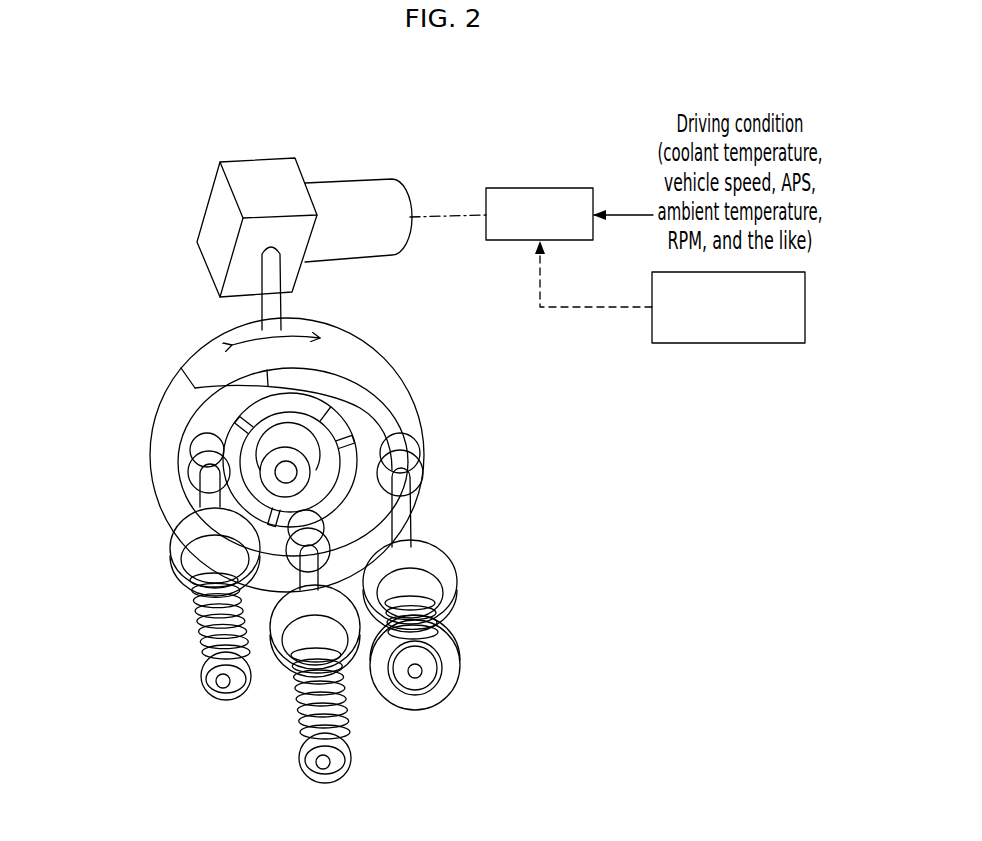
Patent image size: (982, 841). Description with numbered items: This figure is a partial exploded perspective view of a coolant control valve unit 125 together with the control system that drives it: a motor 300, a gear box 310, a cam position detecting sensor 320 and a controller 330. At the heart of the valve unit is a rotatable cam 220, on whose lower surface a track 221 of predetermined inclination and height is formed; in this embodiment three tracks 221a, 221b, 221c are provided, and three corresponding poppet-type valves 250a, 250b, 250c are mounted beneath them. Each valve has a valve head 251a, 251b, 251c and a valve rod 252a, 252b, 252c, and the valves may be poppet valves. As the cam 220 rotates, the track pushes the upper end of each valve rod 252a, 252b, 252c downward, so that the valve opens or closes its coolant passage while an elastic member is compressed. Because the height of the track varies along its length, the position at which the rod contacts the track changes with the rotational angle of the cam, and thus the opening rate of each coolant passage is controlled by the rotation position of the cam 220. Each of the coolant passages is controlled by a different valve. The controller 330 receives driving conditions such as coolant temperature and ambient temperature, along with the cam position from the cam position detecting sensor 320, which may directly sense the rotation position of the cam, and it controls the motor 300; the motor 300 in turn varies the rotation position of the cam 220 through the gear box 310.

The coolant control valve unit 125 is at (165, 342).
The cam 220 is at (363, 357).
The track 221 is at (369, 449).
The first track 221a is at (370, 403).
The second track 221b is at (370, 432).
The third track 221c is at (345, 470).
The first valve 250a is at (461, 571).
The second valve 250b is at (313, 659).
The third valve 250c is at (167, 566).
The valve head of the first valve 251a is at (440, 552).
The valve head of the second valve 251b is at (347, 670).
The valve head of the third valve 251c is at (183, 580).
The valve rod of the first valve 252a is at (411, 508).
The valve rod of the second valve 252b is at (272, 586).
The valve rod of the third valve 252c is at (200, 492).
The motor 300 is at (353, 197).
The gear box 310 is at (255, 168).
The cam position detecting sensor 320 is at (727, 343).
The controller 330 is at (540, 188).